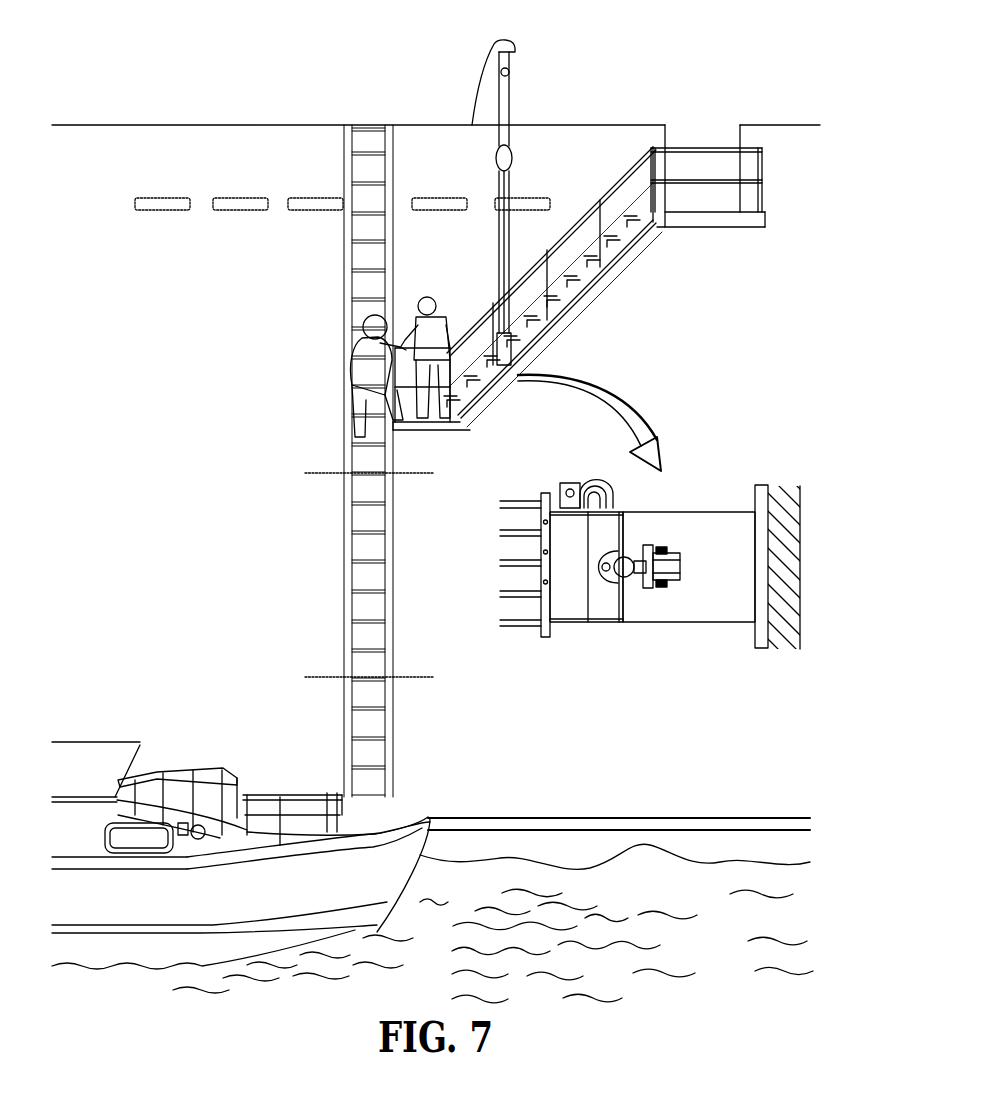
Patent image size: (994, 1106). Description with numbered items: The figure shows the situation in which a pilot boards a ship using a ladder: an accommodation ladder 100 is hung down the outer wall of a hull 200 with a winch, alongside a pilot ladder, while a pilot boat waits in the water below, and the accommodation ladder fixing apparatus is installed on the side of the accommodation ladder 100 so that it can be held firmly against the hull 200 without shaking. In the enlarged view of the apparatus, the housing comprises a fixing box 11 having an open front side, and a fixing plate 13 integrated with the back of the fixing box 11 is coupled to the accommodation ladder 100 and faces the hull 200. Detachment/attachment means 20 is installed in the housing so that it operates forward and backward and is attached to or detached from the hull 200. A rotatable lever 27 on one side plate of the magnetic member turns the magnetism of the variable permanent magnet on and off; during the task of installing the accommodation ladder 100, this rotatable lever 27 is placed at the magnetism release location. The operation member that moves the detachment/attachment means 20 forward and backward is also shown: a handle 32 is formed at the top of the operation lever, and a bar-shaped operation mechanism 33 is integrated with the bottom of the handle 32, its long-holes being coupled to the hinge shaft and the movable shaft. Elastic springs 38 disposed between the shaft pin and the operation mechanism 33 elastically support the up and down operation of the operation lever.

The accommodation ladder 100 is at (475, 420).
The detachment/attachment means 20 is at (586, 646).
The rotatable lever 27 is at (601, 481).
The fixing box 11 is at (727, 508).
The fixing plate 13 is at (753, 640).
The hull 200 is at (795, 488).
The handle 32 is at (647, 575).
The operation mechanism 33 is at (682, 557).
The elastic spring 38 is at (668, 590).